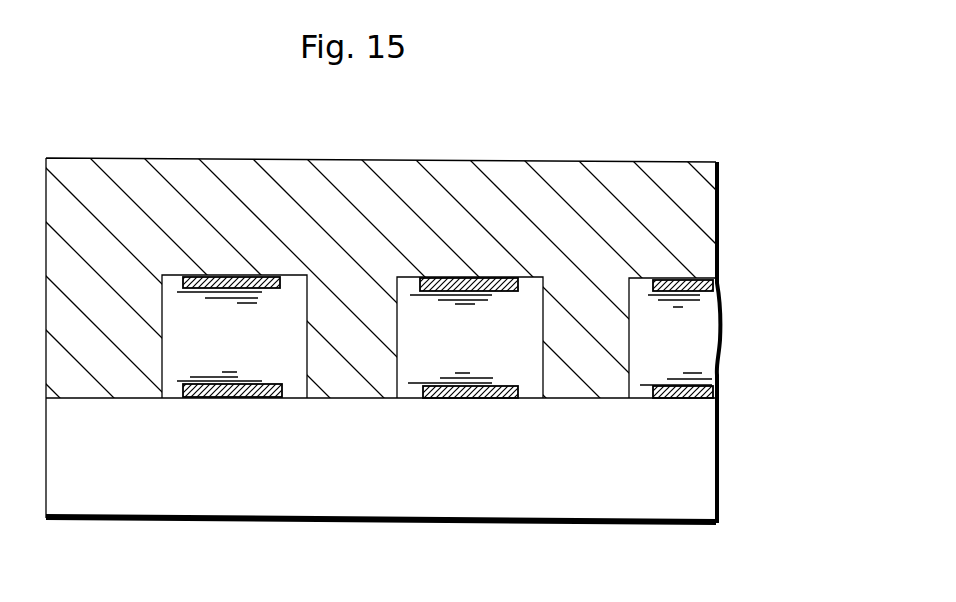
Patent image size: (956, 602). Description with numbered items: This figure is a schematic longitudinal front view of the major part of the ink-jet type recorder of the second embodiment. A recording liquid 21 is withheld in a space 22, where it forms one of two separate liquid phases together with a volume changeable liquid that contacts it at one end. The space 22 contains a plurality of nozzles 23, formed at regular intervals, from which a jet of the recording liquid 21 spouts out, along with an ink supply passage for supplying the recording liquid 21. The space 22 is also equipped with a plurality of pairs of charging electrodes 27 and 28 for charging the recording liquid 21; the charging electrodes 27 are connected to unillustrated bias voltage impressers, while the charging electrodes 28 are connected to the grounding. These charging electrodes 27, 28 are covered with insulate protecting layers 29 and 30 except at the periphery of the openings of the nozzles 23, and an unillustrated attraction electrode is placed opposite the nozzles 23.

The recording liquid 21 is at (222, 348).
The space 22 is at (117, 153).
The nozzles 23 is at (175, 337).
The charging electrodes 27 is at (222, 275).
The charging electrodes 28 is at (225, 398).
The insulate protecting layers 29 is at (260, 277).
The insulate protecting layers 30 is at (247, 398).